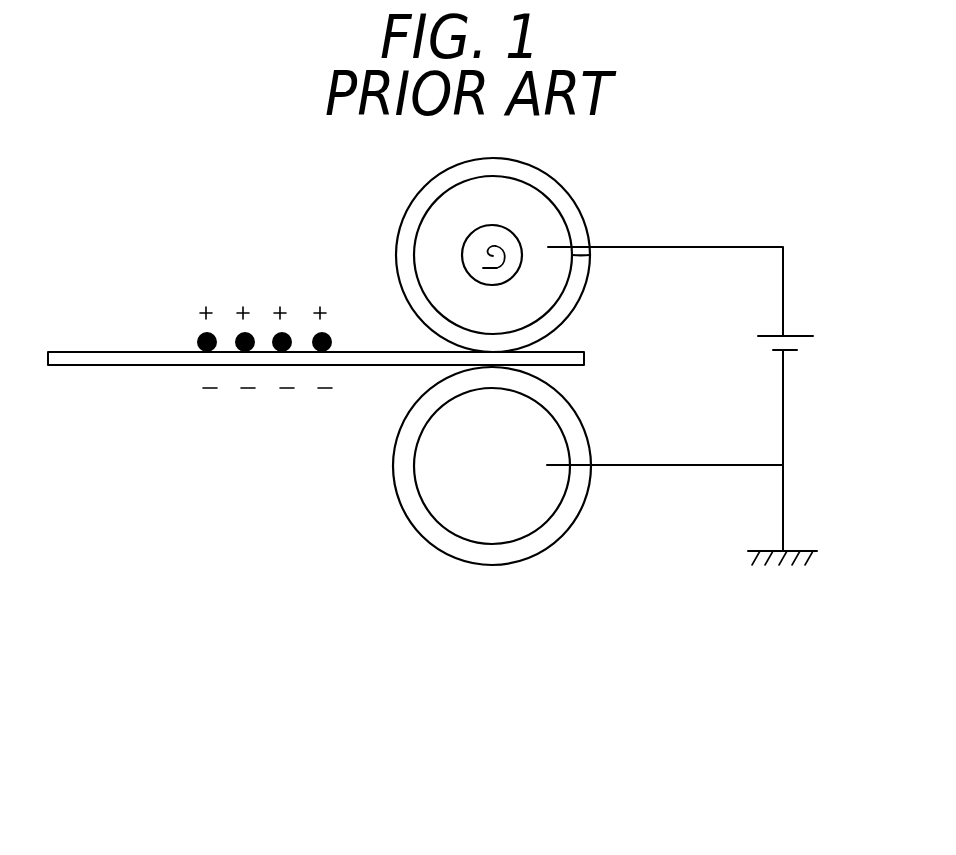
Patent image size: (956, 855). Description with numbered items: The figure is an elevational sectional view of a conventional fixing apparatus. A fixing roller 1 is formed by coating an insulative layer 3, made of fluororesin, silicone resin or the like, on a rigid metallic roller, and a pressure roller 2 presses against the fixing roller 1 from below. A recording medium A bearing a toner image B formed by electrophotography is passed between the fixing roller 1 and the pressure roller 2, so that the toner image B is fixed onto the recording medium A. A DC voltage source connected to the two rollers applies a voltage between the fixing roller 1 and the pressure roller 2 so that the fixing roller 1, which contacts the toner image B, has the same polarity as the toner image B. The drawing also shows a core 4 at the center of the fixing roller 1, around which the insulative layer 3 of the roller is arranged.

The fixing roller 1 is at (560, 175).
The pressure roller 2 is at (389, 463).
The insulative layer 3 is at (580, 228).
The core shaft 4 is at (512, 237).
The recording sheet A is at (108, 365).
The toner particles B is at (212, 333).